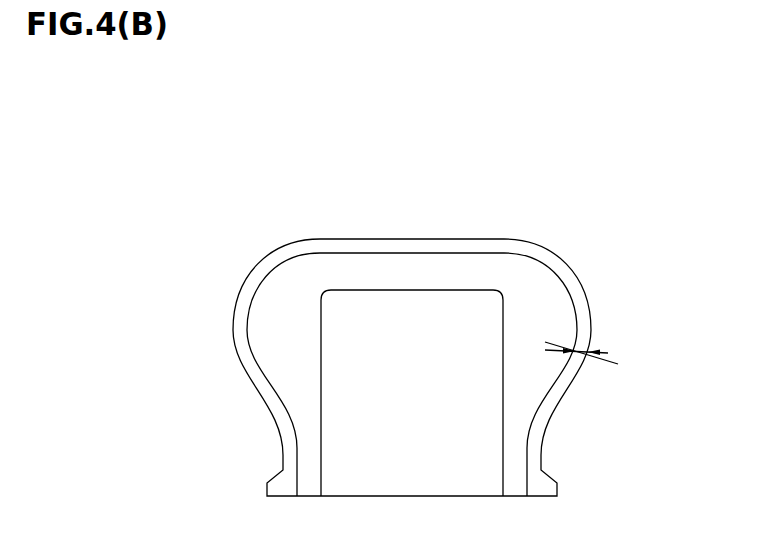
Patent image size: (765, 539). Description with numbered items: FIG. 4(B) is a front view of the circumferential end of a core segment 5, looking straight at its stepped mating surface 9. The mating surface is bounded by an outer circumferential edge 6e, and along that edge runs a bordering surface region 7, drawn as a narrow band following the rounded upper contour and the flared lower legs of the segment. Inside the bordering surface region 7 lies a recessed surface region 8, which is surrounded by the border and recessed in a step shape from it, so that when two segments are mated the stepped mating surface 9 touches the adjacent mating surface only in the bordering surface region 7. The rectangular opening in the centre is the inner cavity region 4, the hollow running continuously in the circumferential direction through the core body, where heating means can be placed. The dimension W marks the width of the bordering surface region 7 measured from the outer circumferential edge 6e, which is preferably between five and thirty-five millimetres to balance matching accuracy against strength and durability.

The core segment 5 is at (340, 223).
The stepped mating surface 9 is at (460, 135).
The bordering surface region 7 is at (439, 247).
The recessed surface region 8 is at (478, 275).
The outer circumferential edge 6e is at (578, 277).
The inner cavity region 4 is at (419, 432).
The width W is at (588, 343).